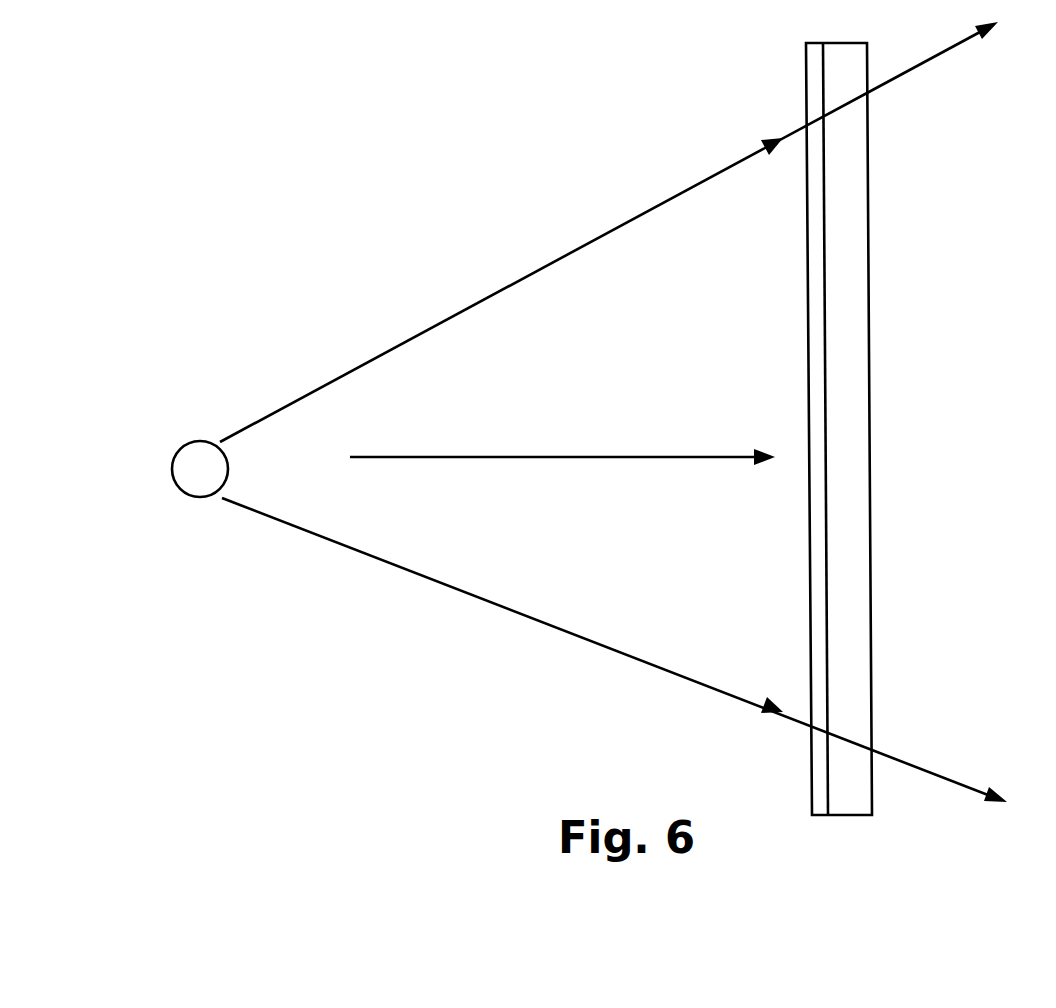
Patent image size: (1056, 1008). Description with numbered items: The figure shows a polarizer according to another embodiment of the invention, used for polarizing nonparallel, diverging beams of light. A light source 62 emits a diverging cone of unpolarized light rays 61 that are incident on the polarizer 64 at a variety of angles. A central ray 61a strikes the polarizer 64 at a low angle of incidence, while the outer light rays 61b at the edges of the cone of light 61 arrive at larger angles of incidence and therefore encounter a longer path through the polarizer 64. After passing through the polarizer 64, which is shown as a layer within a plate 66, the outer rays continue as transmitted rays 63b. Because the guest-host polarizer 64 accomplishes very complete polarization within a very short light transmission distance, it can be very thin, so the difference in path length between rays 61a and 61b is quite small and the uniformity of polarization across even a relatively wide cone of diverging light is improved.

The unpolarized light rays 61 is at (588, 301).
The ray 61a is at (571, 459).
The light rays 61b is at (350, 371).
The light source 62 is at (198, 480).
The transmitted oblique light rays 63b is at (900, 75).
The polarizer 64 is at (813, 258).
The plate 66 is at (847, 406).